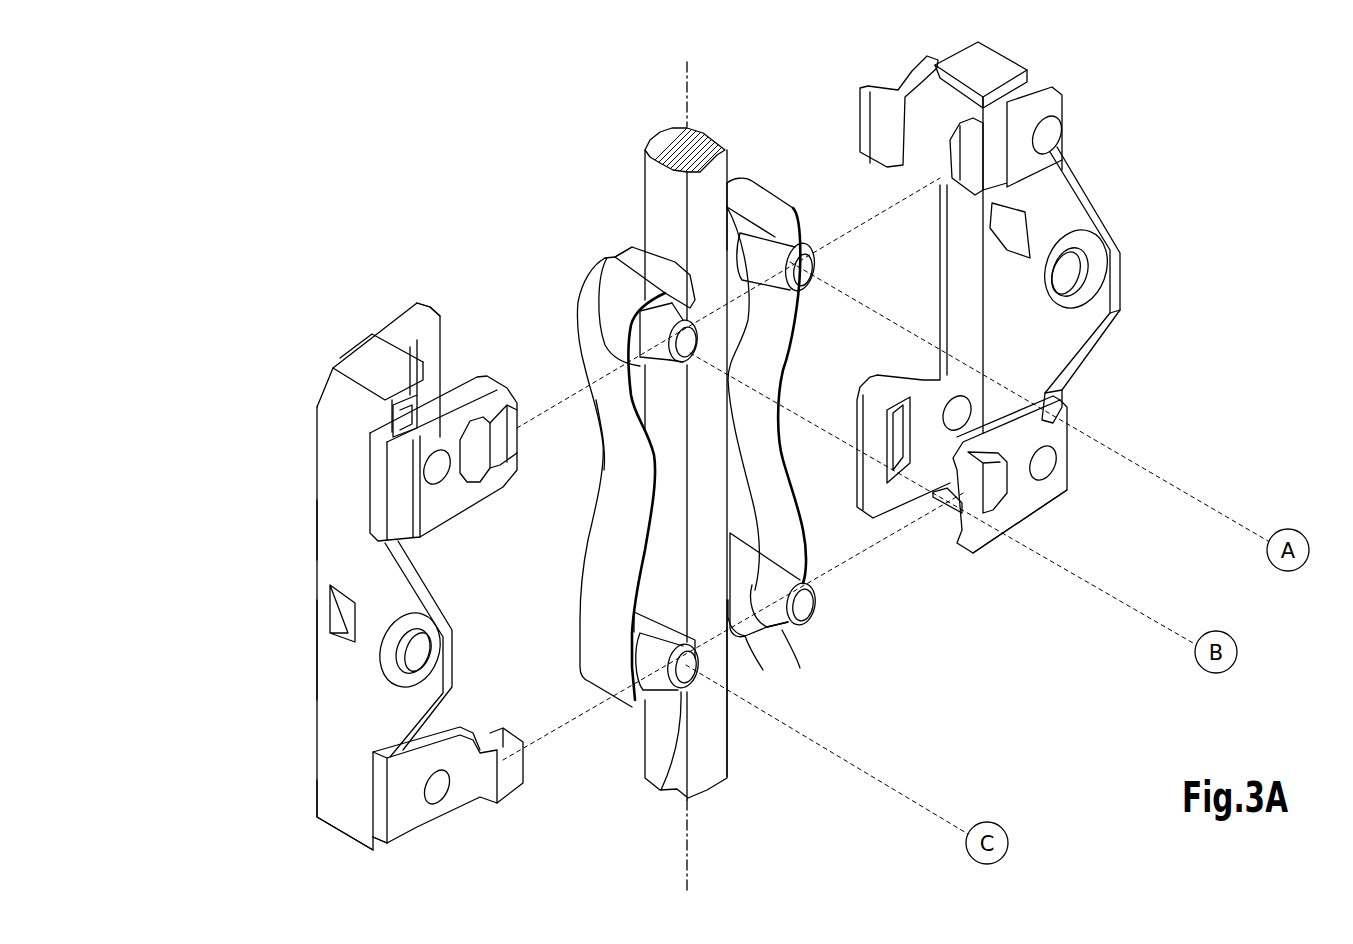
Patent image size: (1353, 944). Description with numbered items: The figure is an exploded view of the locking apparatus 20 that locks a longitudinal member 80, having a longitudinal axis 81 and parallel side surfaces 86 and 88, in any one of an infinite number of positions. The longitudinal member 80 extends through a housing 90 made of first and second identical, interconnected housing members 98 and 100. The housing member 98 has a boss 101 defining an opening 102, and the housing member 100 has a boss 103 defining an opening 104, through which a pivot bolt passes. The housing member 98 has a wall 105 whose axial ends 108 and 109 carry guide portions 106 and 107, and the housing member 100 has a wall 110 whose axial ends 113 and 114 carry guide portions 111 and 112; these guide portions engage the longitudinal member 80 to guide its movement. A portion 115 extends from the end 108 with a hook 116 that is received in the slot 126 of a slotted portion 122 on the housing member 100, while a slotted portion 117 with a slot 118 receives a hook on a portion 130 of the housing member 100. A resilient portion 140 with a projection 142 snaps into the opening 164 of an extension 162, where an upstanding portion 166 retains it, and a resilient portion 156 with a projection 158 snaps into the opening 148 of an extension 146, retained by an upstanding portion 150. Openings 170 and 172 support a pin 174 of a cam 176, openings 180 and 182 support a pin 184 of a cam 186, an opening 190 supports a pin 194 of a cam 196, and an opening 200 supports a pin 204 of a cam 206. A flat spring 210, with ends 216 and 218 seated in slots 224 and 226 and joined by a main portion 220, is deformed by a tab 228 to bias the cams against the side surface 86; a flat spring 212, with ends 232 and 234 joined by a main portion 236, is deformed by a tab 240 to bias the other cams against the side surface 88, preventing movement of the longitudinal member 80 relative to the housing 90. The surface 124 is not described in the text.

The locking apparatus 20 is at (1242, 242).
The longitudinal member 80 is at (710, 758).
The longitudinal axis 81 is at (684, 80).
The side surface 86 is at (728, 755).
The side surface 88 is at (678, 780).
The housing 90 is at (333, 281).
The first housing member 98 is at (1057, 207).
The second housing member 100 is at (332, 482).
The boss 101 is at (1103, 285).
The opening 102 is at (1063, 257).
The boss 103 is at (457, 653).
The opening 104 is at (403, 653).
The wall 105 is at (1080, 323).
The guide portion 106 is at (1003, 73).
The guide portion 107 is at (942, 503).
The axial end 108 is at (1043, 177).
The axial end 109 is at (997, 427).
The wall 110 is at (340, 550).
The guide portion 111 is at (367, 367).
The guide portion 112 is at (418, 837).
The axial end 113 is at (333, 453).
The axial end 114 is at (347, 790).
The portion 115 is at (938, 68).
The hook 116 is at (880, 90).
The slotted portion 117 is at (883, 503).
The slot 118 is at (900, 427).
The slotted portion 122 is at (418, 318).
The chamfered face 124 is at (345, 397).
The slot 126 is at (413, 345).
The portion 130 is at (417, 743).
The resilient portion 140 is at (1027, 117).
The projection 142 is at (950, 157).
The extension 146 is at (1043, 493).
The opening 148 is at (1062, 420).
The upstanding portion 150 is at (987, 500).
The resilient portion 156 is at (460, 810).
The projection 158 is at (510, 783).
The extension 162 is at (423, 510).
The opening 164 is at (477, 463).
The upstanding portion 166 is at (512, 417).
The opening 170 is at (880, 103).
The opening 172 is at (1053, 133).
The pin 174 is at (810, 267).
The cam 176 is at (745, 215).
The opening 180 is at (955, 410).
The opening 182 is at (1053, 457).
The pin 184 is at (807, 607).
The cam 186 is at (747, 633).
The opening 190 is at (440, 473).
The pin 194 is at (645, 325).
The cam 196 is at (637, 258).
The opening 200 is at (427, 787).
The pin 204 is at (677, 779).
The cam 206 is at (650, 620).
The flat spring 210 is at (745, 417).
The flat spring 212 is at (635, 465).
The end 216 is at (750, 193).
The end 218 is at (773, 627).
The main portion 220 is at (757, 483).
The slot 224 is at (773, 233).
The slot 226 is at (753, 553).
The tab 228 is at (1007, 250).
The end 232 is at (615, 285).
The end 234 is at (642, 703).
The main portion 236 is at (665, 293).
The tab 240 is at (343, 617).